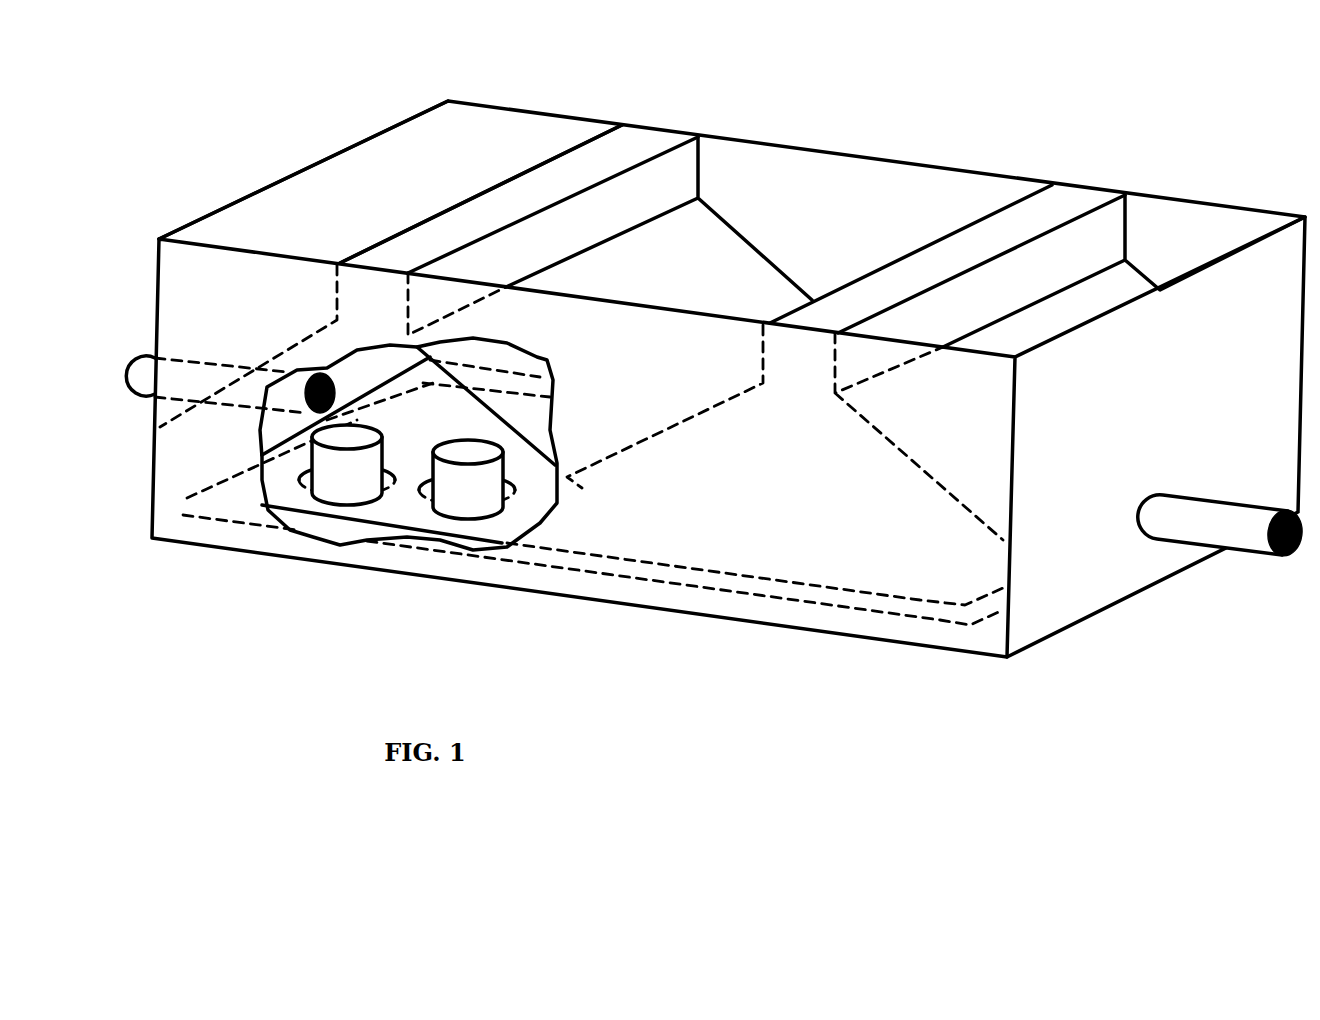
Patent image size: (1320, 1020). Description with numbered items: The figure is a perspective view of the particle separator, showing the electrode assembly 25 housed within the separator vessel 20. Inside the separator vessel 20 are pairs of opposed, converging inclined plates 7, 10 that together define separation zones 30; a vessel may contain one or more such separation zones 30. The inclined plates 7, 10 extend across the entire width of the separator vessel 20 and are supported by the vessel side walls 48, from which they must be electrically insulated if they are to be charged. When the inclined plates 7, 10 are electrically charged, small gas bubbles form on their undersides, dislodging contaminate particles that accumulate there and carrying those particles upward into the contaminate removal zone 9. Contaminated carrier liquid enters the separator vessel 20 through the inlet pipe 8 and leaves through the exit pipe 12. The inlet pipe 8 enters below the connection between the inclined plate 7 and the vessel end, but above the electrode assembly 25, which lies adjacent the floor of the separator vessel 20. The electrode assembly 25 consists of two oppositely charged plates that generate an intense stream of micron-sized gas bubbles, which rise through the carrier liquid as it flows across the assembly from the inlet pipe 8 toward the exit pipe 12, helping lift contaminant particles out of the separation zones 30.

The inclined plate 7 is at (305, 343).
The inlet pipe 8 is at (145, 372).
The contaminate removal zone 9 is at (370, 298).
The inclined plate 10 is at (725, 245).
The exit pipe 12 is at (1253, 540).
The separator vessel 20 is at (1103, 560).
The electrode assembly 25 is at (592, 562).
The separation zone 30 is at (865, 517).
The separator vessel side wall 48 is at (525, 108).